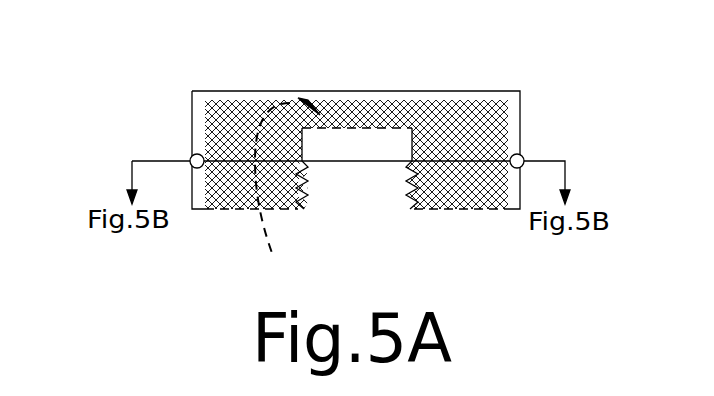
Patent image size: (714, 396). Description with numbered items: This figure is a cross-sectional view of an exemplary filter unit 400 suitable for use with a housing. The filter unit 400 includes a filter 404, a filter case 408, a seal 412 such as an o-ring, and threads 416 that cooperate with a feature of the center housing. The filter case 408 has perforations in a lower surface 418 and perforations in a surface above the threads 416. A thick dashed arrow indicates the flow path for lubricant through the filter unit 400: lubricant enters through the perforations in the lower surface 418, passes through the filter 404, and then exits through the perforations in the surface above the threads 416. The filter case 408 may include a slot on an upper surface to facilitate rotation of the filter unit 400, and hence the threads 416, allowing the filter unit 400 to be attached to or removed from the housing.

The filter unit 400 is at (186, 49).
The filter 404 is at (507, 126).
The filter case 408 is at (488, 90).
The seal 412 is at (526, 155).
The threads 416 is at (302, 209).
The lower surface 418 is at (247, 210).